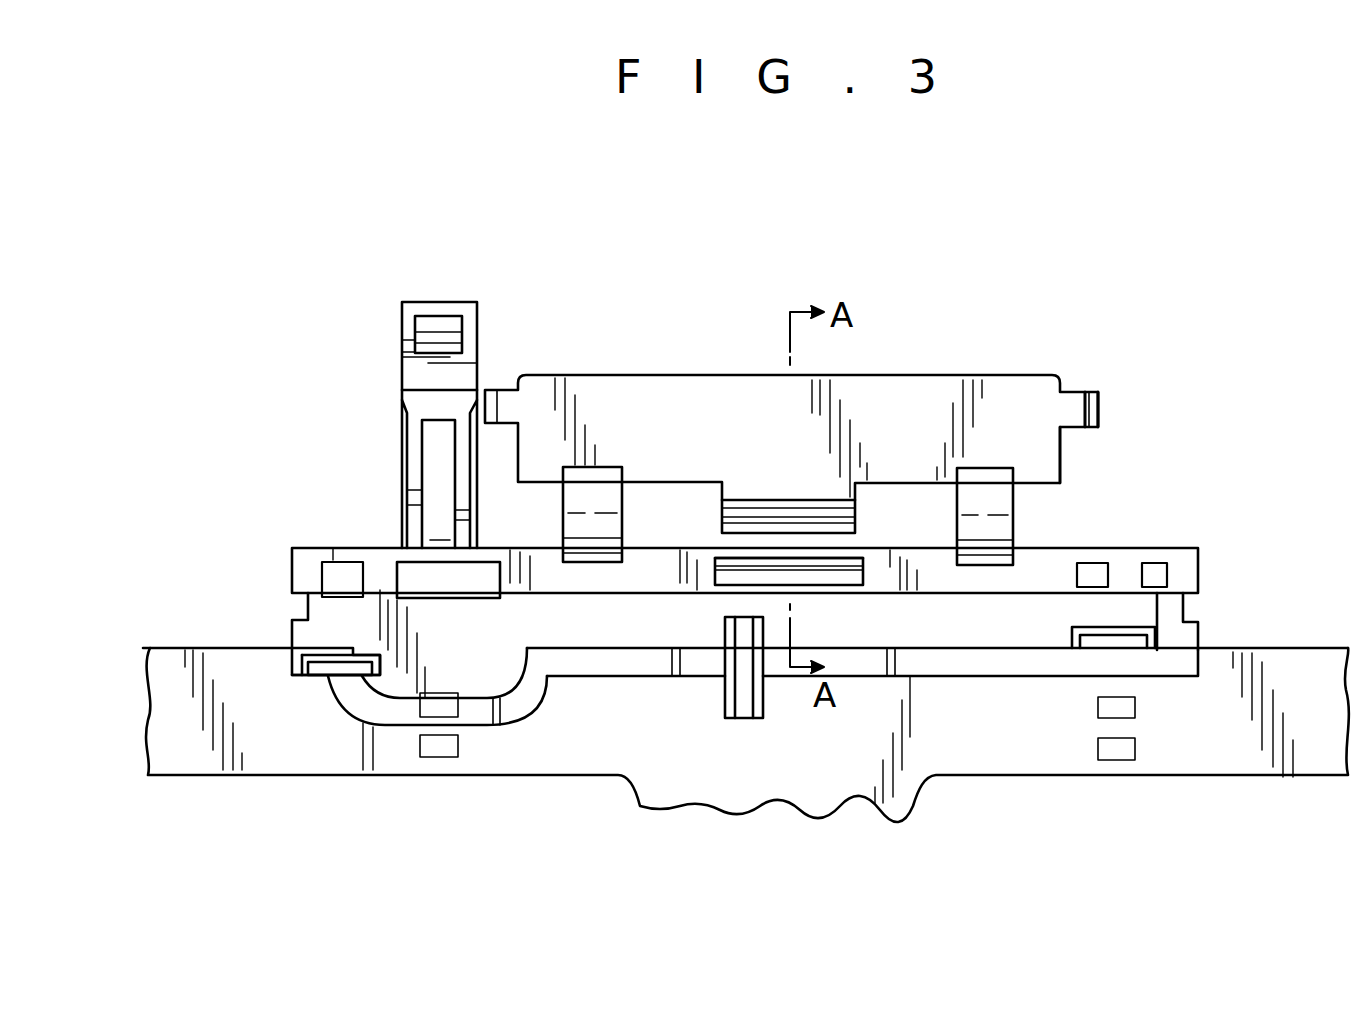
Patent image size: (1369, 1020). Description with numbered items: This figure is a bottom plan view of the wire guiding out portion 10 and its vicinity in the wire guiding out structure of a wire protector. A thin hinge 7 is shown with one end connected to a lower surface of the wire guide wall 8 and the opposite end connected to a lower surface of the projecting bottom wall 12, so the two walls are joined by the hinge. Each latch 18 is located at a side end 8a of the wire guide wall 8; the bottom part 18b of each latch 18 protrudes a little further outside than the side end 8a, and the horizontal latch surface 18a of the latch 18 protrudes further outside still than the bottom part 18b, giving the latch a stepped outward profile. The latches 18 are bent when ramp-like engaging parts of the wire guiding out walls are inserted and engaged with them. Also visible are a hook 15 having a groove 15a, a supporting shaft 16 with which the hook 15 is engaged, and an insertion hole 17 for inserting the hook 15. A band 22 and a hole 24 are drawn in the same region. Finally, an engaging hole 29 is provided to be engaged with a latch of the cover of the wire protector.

The thin hinge 7 is at (1000, 524).
The wire guide wall 8 is at (657, 375).
The side end of the wire guide wall 8a is at (1062, 455).
The wire guiding out portion 10 is at (1160, 512).
The projecting bottom wall 12 is at (1200, 560).
The hook 15 is at (725, 522).
The groove of the hook 15a is at (780, 510).
The supporting shaft 16 is at (833, 560).
The insertion hole 17 is at (828, 585).
The latch 18 is at (1100, 415).
The horizontal latch surface 18a is at (1098, 397).
The bottom part of the latch 18b is at (1078, 392).
The band 22 is at (408, 465).
The hole 24 is at (447, 598).
The engaging hole 29 is at (322, 678).